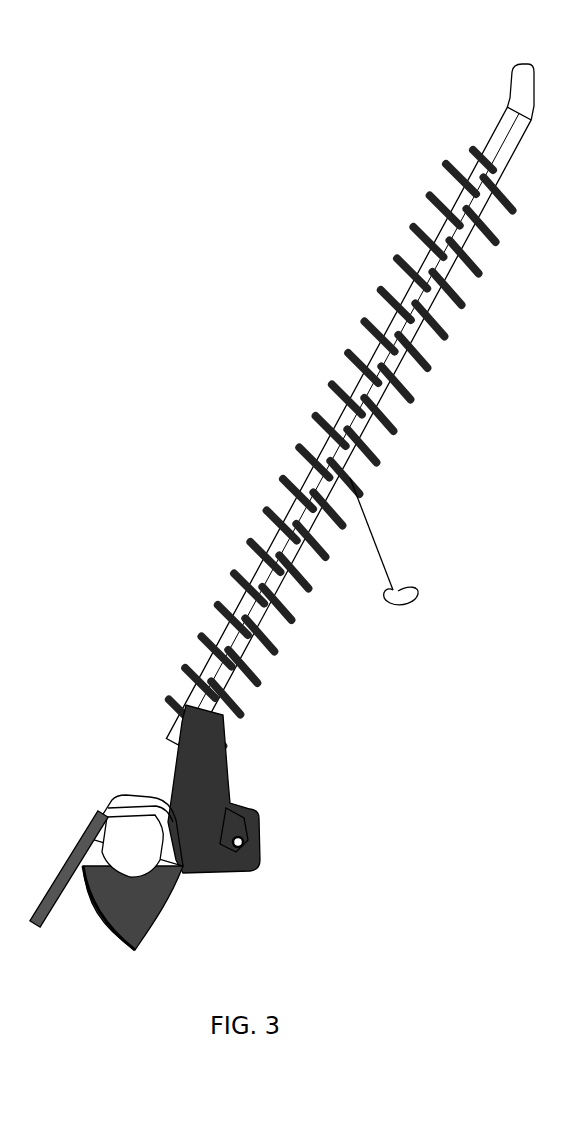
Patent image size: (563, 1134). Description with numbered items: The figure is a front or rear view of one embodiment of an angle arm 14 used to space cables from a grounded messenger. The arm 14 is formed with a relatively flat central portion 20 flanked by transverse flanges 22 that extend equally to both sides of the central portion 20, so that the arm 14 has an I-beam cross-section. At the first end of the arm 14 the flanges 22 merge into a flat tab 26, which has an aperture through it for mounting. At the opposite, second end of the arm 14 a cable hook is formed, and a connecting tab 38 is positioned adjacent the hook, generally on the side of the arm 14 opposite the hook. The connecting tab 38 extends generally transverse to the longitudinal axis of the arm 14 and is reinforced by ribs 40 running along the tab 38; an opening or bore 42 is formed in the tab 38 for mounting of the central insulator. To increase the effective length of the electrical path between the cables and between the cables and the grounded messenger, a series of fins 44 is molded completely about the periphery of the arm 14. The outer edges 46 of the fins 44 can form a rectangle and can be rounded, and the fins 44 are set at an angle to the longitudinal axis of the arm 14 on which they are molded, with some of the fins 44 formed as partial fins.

The angle arm 14 is at (298, 343).
The central portion 20 is at (447, 237).
The transverse flanges 22 is at (420, 266).
The flat tab 26 is at (515, 68).
The fins 44 is at (412, 384).
The outer edges 46 is at (380, 452).
The connecting tab 38 is at (223, 870).
The ribs 40 is at (237, 803).
The opening or bore 42 is at (255, 848).